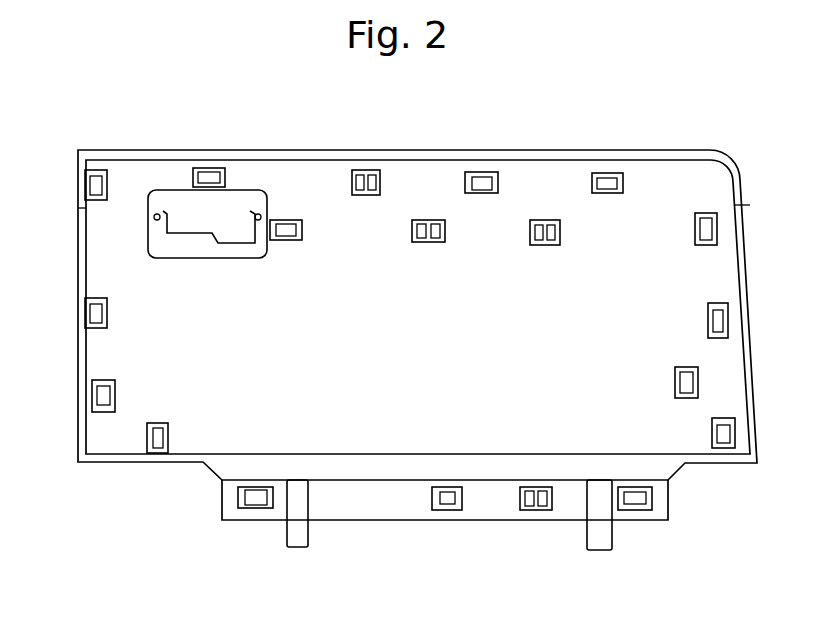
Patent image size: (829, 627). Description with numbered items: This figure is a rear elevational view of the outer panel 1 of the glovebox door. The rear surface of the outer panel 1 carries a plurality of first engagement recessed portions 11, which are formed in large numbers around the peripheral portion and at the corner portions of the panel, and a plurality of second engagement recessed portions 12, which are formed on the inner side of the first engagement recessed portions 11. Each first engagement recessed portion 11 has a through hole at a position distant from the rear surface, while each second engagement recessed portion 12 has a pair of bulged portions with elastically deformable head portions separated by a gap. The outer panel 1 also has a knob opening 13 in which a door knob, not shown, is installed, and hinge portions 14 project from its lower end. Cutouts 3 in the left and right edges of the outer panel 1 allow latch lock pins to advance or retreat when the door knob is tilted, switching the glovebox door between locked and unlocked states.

The outer panel 1 is at (668, 152).
The cutouts 3 is at (84, 208).
The first engagement recessed portions 11 is at (96, 186).
The second engagement recessed portions 12 is at (366, 186).
The knob opening 13 is at (222, 218).
The hinge portions 14 is at (298, 542).